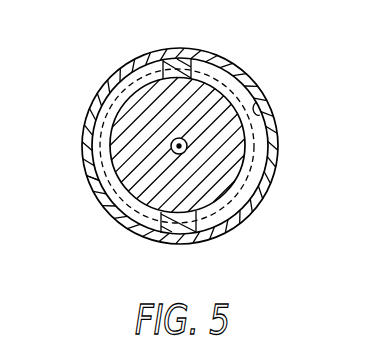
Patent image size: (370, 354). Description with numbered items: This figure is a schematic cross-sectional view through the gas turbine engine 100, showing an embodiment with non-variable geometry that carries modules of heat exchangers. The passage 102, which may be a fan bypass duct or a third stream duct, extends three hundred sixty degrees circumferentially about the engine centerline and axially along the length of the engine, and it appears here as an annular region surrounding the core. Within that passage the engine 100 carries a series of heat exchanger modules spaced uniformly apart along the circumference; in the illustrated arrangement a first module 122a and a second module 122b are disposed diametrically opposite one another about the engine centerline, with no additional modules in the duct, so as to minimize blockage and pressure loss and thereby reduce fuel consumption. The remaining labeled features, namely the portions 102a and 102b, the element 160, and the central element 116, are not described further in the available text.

The gas turbine engine 100 is at (97, 57).
The passage 102 is at (222, 212).
The housing first portion 102a is at (100, 194).
The housing second portion / notch 102b is at (256, 104).
The gap / liner 160 is at (115, 108).
The central bore 116 is at (181, 146).
The first module 122a is at (194, 66).
The second module 122b is at (158, 226).